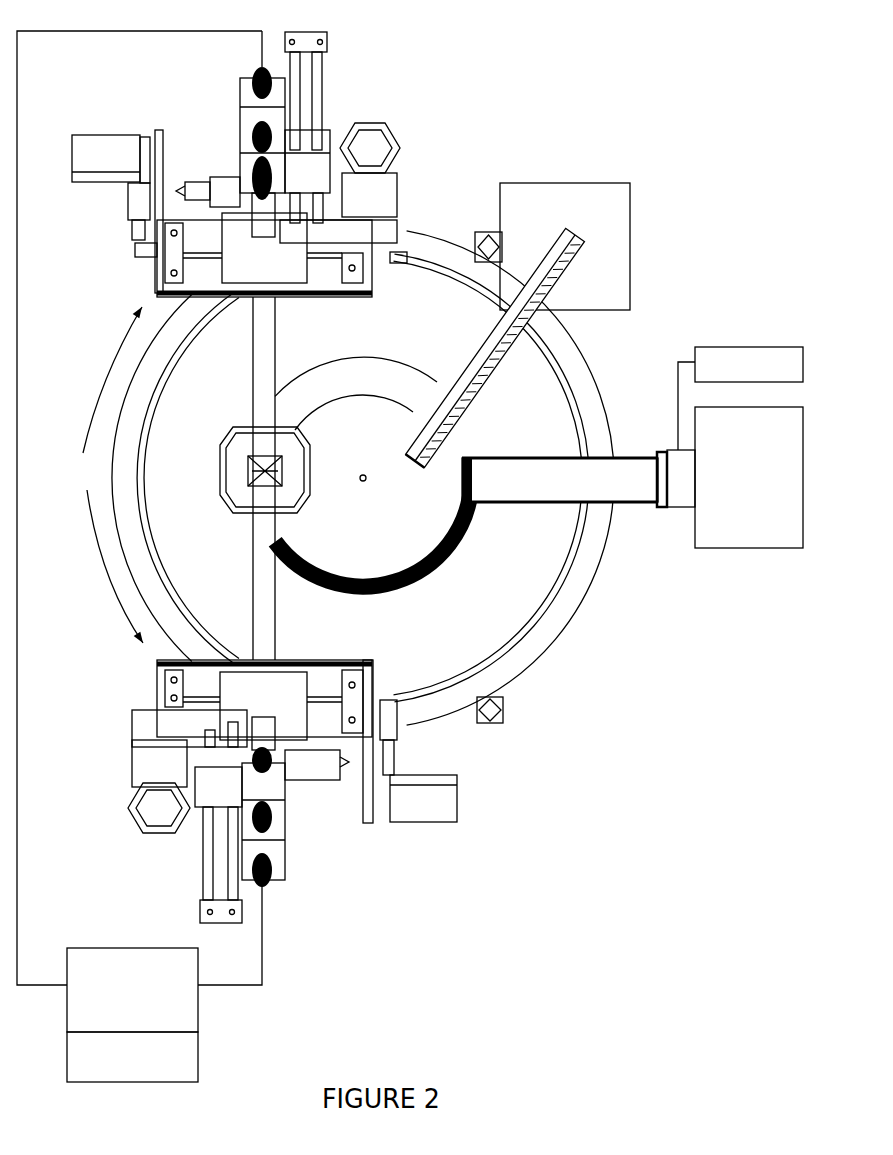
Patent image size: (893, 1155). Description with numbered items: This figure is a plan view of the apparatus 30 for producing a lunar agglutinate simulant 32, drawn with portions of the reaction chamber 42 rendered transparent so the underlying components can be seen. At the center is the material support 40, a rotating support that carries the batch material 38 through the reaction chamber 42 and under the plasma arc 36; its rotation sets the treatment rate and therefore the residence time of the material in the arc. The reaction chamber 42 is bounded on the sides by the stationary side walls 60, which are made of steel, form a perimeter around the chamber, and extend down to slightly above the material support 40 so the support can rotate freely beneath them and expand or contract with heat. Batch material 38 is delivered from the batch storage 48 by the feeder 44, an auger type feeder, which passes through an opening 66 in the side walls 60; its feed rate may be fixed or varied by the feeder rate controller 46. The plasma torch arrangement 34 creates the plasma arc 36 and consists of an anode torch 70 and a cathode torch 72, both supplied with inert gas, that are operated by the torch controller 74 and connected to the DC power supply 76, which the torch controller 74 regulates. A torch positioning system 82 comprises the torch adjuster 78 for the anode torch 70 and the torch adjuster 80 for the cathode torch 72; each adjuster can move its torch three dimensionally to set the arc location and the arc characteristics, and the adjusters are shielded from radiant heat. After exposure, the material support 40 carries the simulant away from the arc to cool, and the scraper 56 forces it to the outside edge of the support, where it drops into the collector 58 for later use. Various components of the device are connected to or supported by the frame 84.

The apparatus 30 is at (565, 725).
The lunar agglutinate simulant 32 is at (350, 370).
The plasma torch arrangement 34 is at (106, 475).
The plasma arc 36 is at (308, 454).
The batch material 38 is at (410, 585).
The material support 40 is at (513, 608).
The reaction chamber 42 is at (465, 645).
The feeder 44 is at (492, 505).
The feeder rate controller 46 is at (717, 347).
The batch storage 48 is at (717, 548).
The scraper 56 is at (465, 397).
The collector 58 is at (632, 232).
The side walls 60 is at (143, 480).
The opening 66 is at (588, 485).
The anode torch 70 is at (262, 368).
The cathode torch 72 is at (262, 598).
The torch controller 74 is at (198, 1052).
The DC power supply 76 is at (198, 1012).
The torch adjuster 78 is at (108, 152).
The torch adjuster 80 is at (443, 800).
The torch positioning system 82 is at (115, 257).
The frame 84 is at (488, 726).